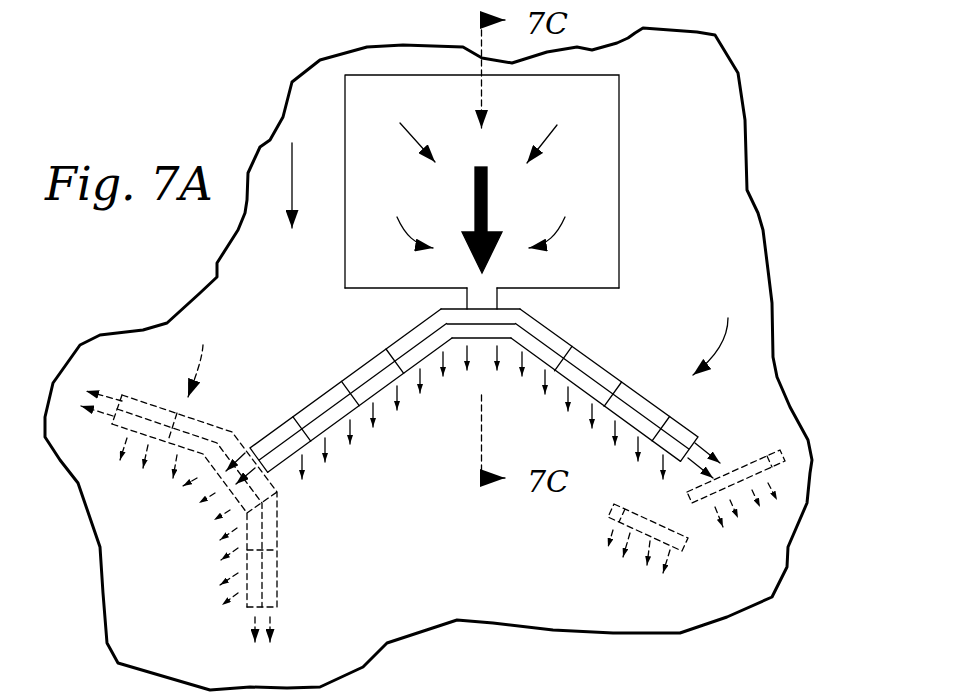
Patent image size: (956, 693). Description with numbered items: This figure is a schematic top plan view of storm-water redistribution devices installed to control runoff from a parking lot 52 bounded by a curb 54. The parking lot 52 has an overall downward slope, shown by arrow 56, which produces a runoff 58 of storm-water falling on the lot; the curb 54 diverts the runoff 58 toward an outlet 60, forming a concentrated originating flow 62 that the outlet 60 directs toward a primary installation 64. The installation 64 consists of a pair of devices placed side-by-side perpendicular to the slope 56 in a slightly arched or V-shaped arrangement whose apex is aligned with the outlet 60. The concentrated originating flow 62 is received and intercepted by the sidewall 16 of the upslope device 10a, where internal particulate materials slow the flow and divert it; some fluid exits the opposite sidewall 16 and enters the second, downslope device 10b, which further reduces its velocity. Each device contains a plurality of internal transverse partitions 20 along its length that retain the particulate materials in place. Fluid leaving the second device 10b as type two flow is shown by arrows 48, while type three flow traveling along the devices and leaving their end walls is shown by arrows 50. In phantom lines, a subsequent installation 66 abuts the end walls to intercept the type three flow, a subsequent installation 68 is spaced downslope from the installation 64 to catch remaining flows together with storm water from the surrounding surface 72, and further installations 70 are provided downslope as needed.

The device located on the upslope side of the installation 10a is at (533, 319).
The second device located downslope 10b is at (488, 341).
The sidewall 16 is at (490, 308).
The transverse partitions 20 is at (300, 416).
The arrows showing type 2 flow 48 is at (372, 420).
The arrows showing type 3 flow 50 is at (113, 396).
The parking lot 52 is at (619, 92).
The curb 54 is at (600, 288).
The slope arrow 56 is at (291, 168).
The runoff 58 is at (405, 230).
The outlet 60 is at (467, 302).
The concentrated originating flow 62 is at (487, 212).
The installation 64 is at (718, 334).
The subsequent installation 66 is at (204, 358).
The subsequent installation 68 is at (783, 456).
The further installations 70 is at (640, 542).
The surrounding surface 72 is at (737, 256).